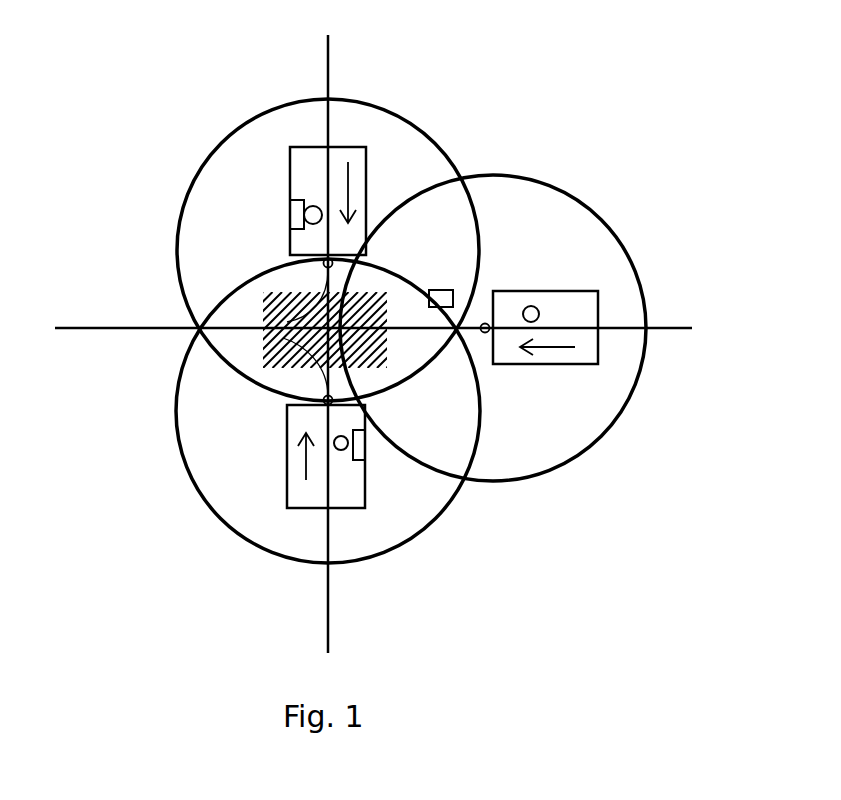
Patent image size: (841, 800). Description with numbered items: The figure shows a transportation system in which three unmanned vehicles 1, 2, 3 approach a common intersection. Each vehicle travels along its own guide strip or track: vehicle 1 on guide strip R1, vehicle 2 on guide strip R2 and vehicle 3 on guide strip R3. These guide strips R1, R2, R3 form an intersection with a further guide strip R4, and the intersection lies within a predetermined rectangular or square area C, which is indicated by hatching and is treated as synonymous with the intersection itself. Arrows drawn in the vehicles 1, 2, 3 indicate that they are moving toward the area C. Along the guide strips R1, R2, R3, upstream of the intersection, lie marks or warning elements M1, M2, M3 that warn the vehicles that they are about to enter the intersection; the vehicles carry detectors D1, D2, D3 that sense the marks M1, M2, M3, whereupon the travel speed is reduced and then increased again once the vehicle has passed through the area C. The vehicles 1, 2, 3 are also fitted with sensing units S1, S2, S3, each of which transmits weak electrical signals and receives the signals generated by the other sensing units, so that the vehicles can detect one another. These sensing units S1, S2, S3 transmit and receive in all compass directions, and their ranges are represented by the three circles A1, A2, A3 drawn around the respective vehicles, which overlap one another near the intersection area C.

The unmanned vehicle 1 is at (562, 310).
The unmanned vehicle 2 is at (298, 497).
The unmanned vehicle 3 is at (303, 177).
The range circle A1 is at (583, 203).
The range circle A2 is at (193, 495).
The range circle A3 is at (248, 122).
The detector D1 is at (528, 307).
The detector D2 is at (337, 450).
The detector D3 is at (315, 205).
The mark M1 is at (453, 290).
The mark M2 is at (362, 446).
The mark M3 is at (292, 213).
The sensing unit S1 is at (483, 333).
The sensing unit S2 is at (327, 397).
The sensing unit S3 is at (340, 263).
The guide strip R1 is at (667, 327).
The guide strip R2 is at (327, 617).
The guide strip R3 is at (328, 68).
The guide strip R4 is at (87, 328).
The intersection area C is at (283, 338).